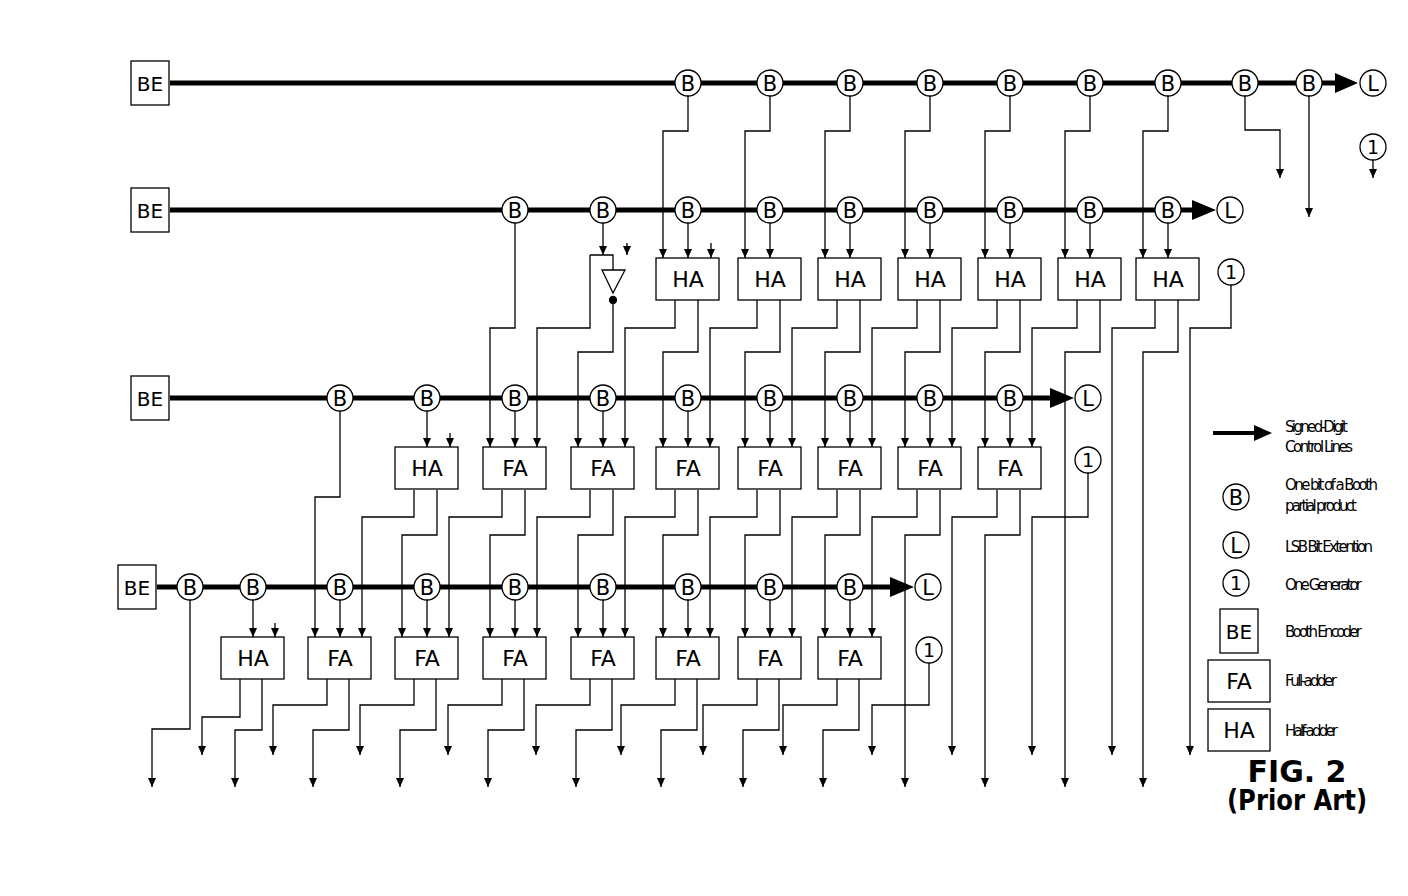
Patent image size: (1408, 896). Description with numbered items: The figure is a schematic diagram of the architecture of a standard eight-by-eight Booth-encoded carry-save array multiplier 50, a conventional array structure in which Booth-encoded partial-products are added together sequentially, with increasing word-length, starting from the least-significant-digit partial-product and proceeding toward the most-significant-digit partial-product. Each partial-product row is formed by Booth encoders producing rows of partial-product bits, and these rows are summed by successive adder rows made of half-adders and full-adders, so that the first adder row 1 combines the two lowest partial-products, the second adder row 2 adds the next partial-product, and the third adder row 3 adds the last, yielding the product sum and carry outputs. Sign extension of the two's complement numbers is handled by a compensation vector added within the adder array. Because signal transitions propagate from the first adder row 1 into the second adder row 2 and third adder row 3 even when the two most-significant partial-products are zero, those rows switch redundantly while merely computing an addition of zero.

The standard 8×8 Booth-encoded carry-save array multiplier 50 is at (186, 28).
The first adder row 1 is at (659, 279).
The second adder row 2 is at (580, 468).
The third adder row 3 is at (498, 659).